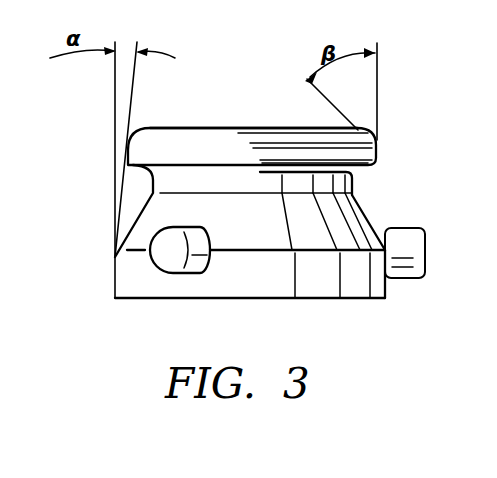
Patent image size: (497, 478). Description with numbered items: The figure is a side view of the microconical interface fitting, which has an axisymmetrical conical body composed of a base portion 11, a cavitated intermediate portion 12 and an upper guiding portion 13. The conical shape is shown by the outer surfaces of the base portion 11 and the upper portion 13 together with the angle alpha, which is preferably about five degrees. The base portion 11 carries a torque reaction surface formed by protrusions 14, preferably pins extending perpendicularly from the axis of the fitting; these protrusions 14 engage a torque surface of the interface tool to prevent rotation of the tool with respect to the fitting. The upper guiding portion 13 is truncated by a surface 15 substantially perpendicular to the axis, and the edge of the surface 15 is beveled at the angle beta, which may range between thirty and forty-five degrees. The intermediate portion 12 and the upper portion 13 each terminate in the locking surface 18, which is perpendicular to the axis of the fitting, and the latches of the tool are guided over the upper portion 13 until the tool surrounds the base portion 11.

The base portion 11 is at (127, 270).
The cavitated intermediate portion 12 is at (353, 195).
The upper guiding portion 13 is at (373, 163).
The protrusions 14 is at (165, 243).
The surface 15 is at (272, 128).
The locking surface 18 is at (140, 166).